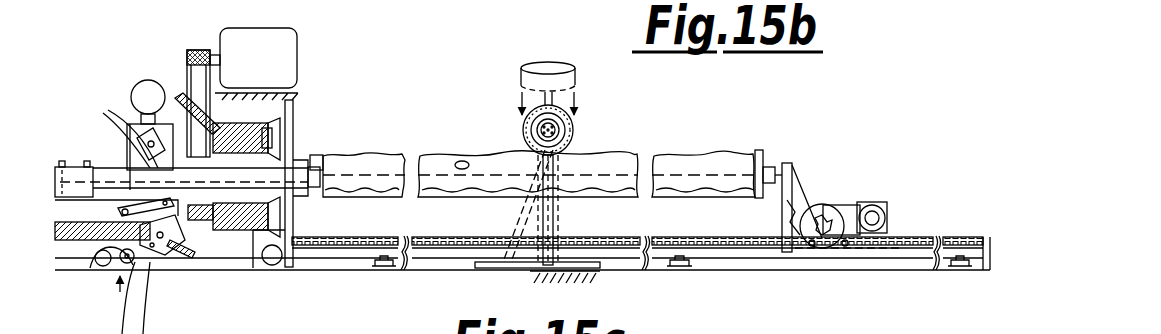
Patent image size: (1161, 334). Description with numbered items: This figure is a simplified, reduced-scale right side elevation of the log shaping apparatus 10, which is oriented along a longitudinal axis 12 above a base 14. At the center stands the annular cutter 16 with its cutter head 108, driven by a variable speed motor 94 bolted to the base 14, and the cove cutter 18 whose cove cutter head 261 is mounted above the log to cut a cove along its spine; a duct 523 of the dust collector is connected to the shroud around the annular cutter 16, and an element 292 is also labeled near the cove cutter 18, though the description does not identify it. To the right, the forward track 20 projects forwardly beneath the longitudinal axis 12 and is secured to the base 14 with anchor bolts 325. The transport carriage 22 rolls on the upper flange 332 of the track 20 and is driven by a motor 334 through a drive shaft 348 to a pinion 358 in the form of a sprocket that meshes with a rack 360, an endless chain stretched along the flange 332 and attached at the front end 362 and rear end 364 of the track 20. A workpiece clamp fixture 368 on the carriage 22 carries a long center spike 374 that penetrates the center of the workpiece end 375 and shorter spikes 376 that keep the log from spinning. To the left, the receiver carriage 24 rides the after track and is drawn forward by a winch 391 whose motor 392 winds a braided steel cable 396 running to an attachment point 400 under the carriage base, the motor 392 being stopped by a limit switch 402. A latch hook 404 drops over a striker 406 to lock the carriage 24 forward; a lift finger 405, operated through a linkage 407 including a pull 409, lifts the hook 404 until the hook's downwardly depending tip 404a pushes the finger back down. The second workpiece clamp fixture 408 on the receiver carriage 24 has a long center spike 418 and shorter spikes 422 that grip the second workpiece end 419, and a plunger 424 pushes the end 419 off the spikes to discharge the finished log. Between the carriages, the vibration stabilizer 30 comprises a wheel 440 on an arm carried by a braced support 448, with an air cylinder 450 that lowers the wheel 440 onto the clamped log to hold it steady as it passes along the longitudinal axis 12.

The log shaping apparatus 10 is at (313, 62).
The longitudinal axis 12 is at (467, 150).
The base 14 is at (590, 266).
The annular cutter 16 is at (303, 160).
The cove cutter 18 is at (152, 70).
The forward track 20 is at (745, 256).
The transport carriage 22 is at (877, 190).
The receiver carriage 24 is at (299, 192).
The vibration stabilizer 30 is at (580, 90).
The variable speed motor 94 is at (264, 69).
The cutter head 108 is at (295, 118).
The cove cutter head 261 is at (150, 165).
The knob 292 is at (147, 80).
The anchor bolts 325 is at (396, 262).
The upper flange 332 is at (696, 240).
The motor 334 is at (832, 205).
The drive shaft 348 is at (815, 248).
The pinion 358 is at (833, 248).
The rack 360 is at (887, 212).
The front end 362 is at (990, 238).
The rear end 364 is at (298, 255).
The workpiece clamp fixture 368 is at (776, 165).
The long center spike 374 is at (736, 154).
The workpiece end 375 is at (744, 155).
The shorter spikes 376 is at (762, 195).
The winch 391 is at (112, 320).
The motor 392 is at (118, 265).
The braided steel cable 396 is at (104, 266).
The attachment point 400 is at (98, 167).
The limit switch 402 is at (136, 135).
The latch hook 404 is at (127, 135).
The downwardly depending tip 404a is at (142, 145).
The lift finger 405 is at (155, 262).
The striker 406 is at (186, 250).
The linkage 407 is at (170, 250).
The second workpiece clamp fixture 408 is at (290, 135).
The pull 409 is at (206, 253).
The long center spike 418 is at (330, 160).
The second workpiece end 419 is at (325, 160).
The shorter spikes 422 is at (320, 165).
The plunger 424 is at (325, 195).
The wheel 440 is at (575, 92).
The braced support 448 is at (562, 213).
The air cylinder 450 is at (534, 215).
The duct 523 is at (280, 268).